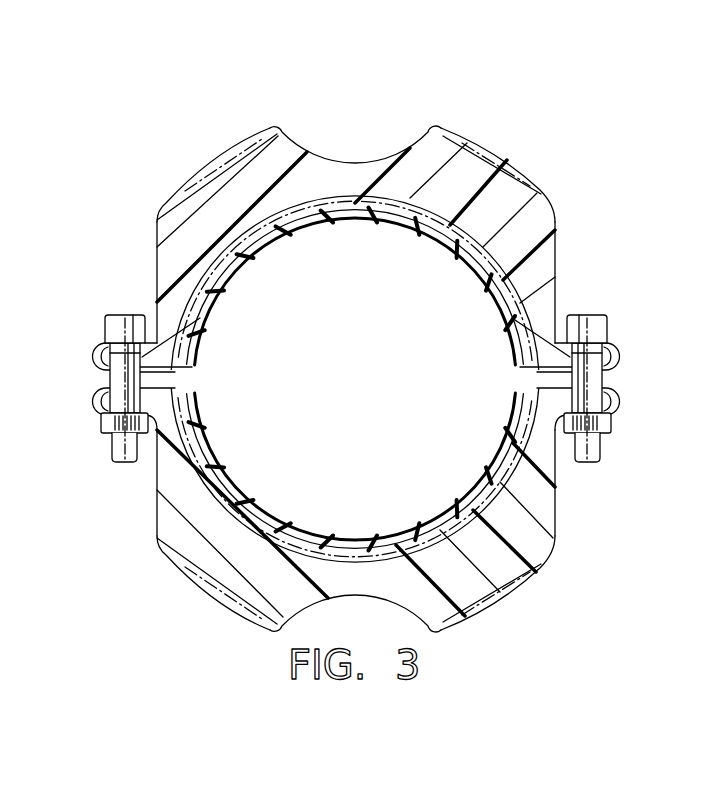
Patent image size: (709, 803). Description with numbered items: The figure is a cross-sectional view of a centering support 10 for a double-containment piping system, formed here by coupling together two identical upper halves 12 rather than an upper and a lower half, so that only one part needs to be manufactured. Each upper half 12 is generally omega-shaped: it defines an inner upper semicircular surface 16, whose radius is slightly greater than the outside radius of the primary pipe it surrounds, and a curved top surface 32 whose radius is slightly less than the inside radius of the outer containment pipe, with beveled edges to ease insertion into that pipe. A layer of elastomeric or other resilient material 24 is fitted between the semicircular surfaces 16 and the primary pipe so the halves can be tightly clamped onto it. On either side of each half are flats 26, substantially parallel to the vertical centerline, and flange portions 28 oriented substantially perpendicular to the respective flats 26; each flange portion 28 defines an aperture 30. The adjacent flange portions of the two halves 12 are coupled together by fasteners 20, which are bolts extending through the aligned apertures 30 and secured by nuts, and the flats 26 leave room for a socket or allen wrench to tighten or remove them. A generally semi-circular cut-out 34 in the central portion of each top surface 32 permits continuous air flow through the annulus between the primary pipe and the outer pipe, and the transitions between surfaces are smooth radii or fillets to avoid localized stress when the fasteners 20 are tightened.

The centering support 10 is at (496, 131).
The upper half 12 is at (540, 226).
The upper semicircular surface 16 is at (298, 224).
The fasteners 20 is at (106, 326).
The resilient material 24 is at (405, 217).
The flats 26 is at (157, 268).
The flange portions 28 is at (97, 400).
The aperture 30 is at (178, 368).
The curved top surface 32 is at (204, 160).
The semi-circular cut-out 34 is at (348, 163).